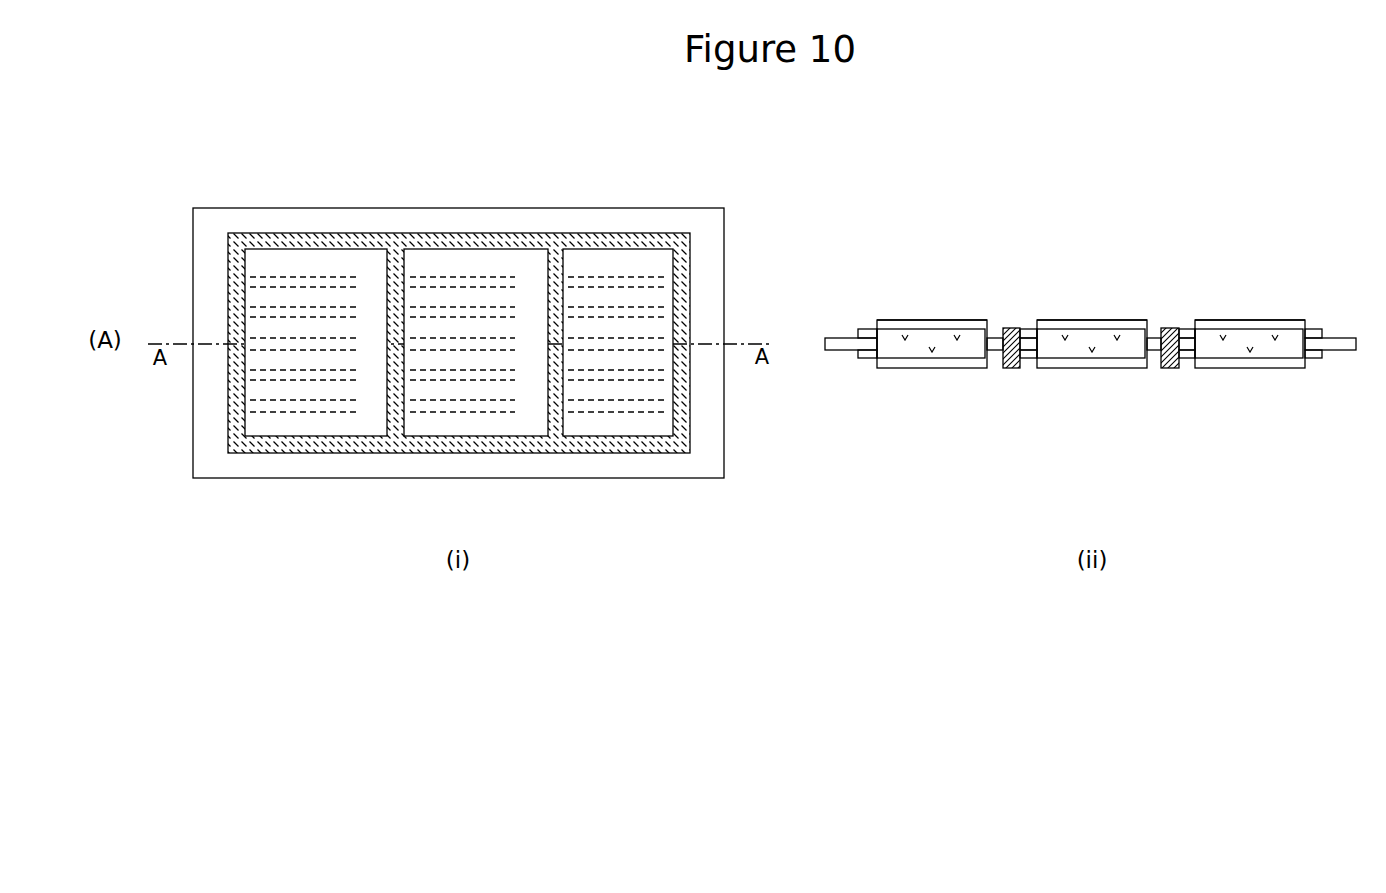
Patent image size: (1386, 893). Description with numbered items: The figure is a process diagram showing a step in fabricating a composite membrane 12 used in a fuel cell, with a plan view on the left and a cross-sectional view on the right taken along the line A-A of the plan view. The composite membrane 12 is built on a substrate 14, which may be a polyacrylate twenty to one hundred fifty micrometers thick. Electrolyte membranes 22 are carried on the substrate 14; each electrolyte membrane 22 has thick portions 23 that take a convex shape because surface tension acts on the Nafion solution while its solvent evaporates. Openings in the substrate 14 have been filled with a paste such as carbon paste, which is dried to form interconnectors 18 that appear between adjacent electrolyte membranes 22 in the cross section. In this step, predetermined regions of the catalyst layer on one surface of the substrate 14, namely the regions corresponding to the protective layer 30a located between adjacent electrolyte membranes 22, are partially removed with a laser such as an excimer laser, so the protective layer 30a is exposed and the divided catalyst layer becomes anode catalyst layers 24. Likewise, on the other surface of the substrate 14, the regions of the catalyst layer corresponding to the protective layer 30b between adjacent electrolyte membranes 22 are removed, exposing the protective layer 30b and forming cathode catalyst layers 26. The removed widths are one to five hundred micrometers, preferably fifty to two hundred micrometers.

The composite membrane 12 is at (472, 518).
The substrate 14 is at (630, 220).
The interconnector 18 is at (1016, 369).
The electrolyte membrane 22 is at (950, 352).
The thick portion 23 is at (663, 340).
The anode catalyst layer 24 is at (315, 248).
The cathode catalyst layer 26 is at (934, 362).
The protective layer 30a is at (677, 237).
The protective layer 30b is at (864, 359).